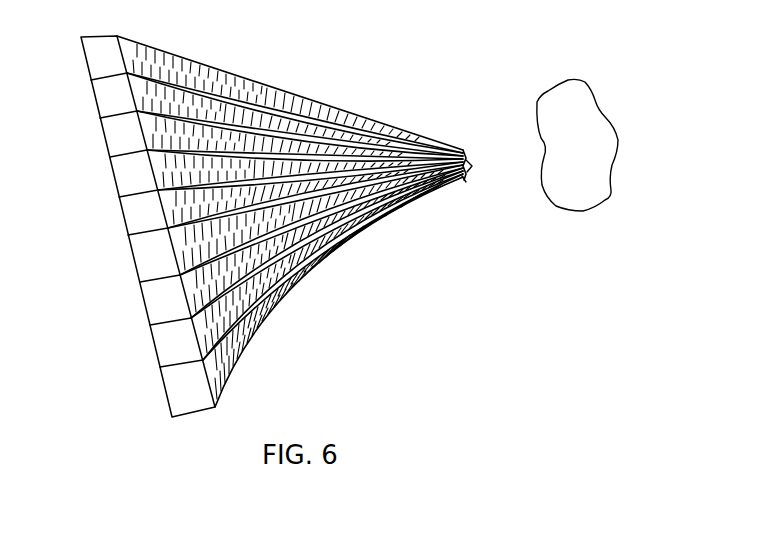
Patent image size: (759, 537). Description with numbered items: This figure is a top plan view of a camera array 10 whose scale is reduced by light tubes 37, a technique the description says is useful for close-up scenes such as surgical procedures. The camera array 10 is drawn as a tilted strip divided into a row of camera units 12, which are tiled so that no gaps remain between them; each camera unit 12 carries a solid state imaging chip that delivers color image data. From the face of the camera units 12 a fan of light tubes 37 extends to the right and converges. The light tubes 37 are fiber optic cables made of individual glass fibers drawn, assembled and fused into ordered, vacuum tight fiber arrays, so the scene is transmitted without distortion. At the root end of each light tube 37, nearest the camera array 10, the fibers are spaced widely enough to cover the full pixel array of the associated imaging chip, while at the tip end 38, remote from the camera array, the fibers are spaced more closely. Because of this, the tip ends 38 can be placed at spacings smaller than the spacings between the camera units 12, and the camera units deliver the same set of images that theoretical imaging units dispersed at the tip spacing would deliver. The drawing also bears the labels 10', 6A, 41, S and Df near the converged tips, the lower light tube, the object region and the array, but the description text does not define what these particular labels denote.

The camera array 10 is at (112, 226).
The camera units 12 is at (147, 304).
The focal image of array 10' is at (481, 138).
The focal zone lines 6A is at (477, 174).
The tip end 38 is at (465, 187).
The light tubes 37 is at (297, 292).
The outer beam boundary 41 is at (228, 397).
The subject / skin S is at (612, 190).
The focal distance Df is at (131, 347).